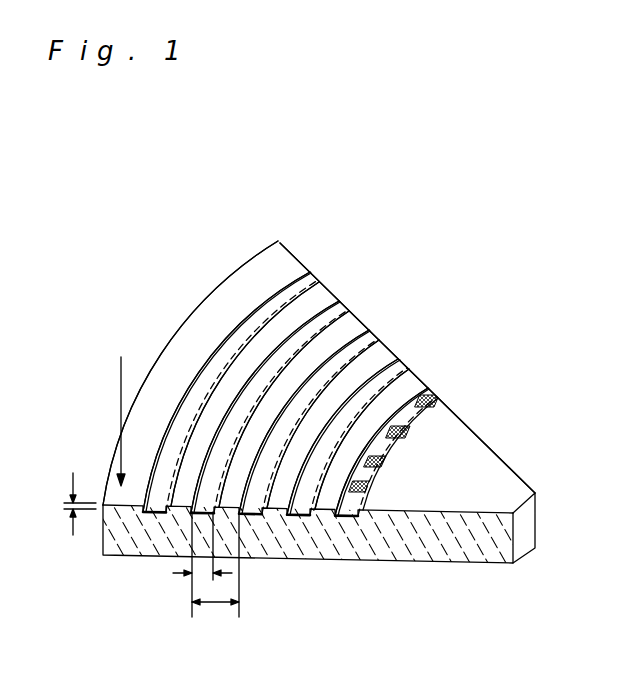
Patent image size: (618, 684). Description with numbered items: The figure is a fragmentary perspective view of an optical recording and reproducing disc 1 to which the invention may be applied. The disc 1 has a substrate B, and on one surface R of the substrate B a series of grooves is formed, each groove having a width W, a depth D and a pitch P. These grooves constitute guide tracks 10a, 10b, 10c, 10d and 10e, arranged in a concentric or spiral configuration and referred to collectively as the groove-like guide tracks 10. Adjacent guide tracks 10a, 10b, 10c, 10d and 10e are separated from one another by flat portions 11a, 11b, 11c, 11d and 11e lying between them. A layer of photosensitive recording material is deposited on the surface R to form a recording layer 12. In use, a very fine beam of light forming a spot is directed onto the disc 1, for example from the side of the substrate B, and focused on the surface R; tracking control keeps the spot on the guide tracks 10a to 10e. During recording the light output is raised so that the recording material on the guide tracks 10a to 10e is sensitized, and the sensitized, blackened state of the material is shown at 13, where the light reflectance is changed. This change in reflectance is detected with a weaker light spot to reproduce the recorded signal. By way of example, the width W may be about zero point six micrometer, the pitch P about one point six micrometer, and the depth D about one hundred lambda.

The optical recording and reproducing disc 1 is at (166, 346).
The groove-like guide tracks 10 is at (240, 334).
The guide track 10a is at (311, 271).
The guide track 10b is at (345, 312).
The guide track 10c is at (380, 342).
The guide track 10d is at (412, 370).
The guide track 10e is at (441, 396).
The flat portion 11a is at (286, 242).
The flat portion 11b is at (325, 287).
The flat portion 11c is at (366, 327).
The flat portion 11d is at (399, 358).
The flat portion 11e is at (425, 382).
The recording layer 12 is at (412, 515).
The sensitized state of recording material 13 is at (434, 401).
The substrate B is at (305, 545).
The surface R is at (109, 421).
The depth D is at (71, 504).
The width W is at (201, 572).
The pitch P is at (215, 570).